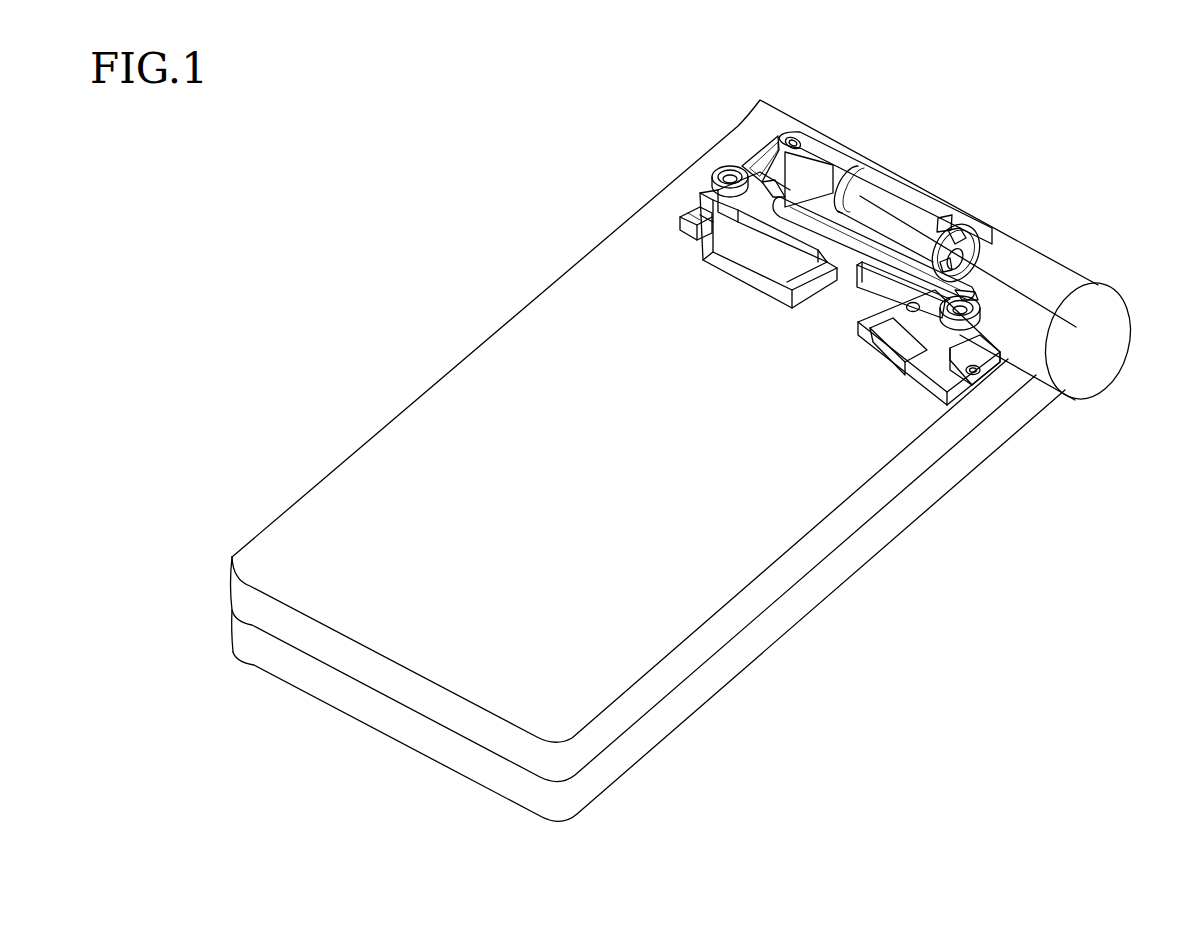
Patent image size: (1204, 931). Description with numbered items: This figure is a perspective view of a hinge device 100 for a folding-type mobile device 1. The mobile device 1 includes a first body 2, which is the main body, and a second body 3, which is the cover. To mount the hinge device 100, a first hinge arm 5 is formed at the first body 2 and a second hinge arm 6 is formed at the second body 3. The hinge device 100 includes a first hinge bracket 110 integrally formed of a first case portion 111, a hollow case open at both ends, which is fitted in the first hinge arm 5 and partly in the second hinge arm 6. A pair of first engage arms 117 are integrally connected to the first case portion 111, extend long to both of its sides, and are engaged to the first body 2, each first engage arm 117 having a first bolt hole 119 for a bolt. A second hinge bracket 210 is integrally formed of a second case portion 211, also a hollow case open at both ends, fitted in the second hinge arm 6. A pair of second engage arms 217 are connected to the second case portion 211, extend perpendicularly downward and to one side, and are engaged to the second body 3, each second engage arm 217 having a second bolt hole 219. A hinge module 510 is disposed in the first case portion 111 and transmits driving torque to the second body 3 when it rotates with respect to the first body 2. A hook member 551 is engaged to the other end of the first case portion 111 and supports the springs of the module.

The mobile device 1 is at (796, 636).
The first body 2 is at (906, 540).
The second body 3 is at (560, 262).
The first hinge arm 5 is at (1103, 266).
The second hinge arm 6 is at (891, 166).
The hinge device 100 is at (535, 134).
The first hinge bracket 110 is at (924, 222).
The first case portion 111 is at (905, 192).
The first engage arm 117 is at (863, 347).
The first bolt hole 119 is at (693, 215).
The second hinge bracket 210 is at (925, 209).
The second case portion 211 is at (838, 148).
The second engage arm 217 is at (756, 158).
The second bolt hole 219 is at (727, 170).
The hinge module 510 is at (966, 229).
The hook member 551 is at (980, 262).